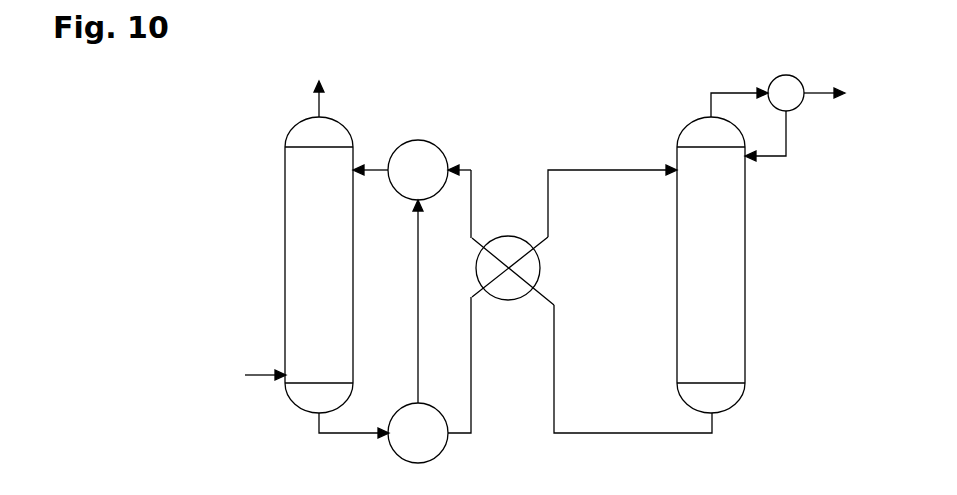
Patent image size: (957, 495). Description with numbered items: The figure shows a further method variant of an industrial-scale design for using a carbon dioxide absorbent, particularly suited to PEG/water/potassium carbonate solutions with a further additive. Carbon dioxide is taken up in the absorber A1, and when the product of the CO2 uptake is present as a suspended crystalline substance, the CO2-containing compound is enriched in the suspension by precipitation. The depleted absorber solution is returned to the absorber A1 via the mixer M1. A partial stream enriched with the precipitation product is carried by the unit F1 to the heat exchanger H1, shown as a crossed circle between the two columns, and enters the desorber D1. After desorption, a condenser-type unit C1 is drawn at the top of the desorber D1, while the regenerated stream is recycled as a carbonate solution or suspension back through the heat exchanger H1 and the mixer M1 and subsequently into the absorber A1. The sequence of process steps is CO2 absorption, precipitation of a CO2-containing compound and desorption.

The absorber A1 is at (319, 265).
The mixer M1 is at (418, 170).
The pump / feed unit F1 is at (418, 433).
The heat exchanger H1 is at (513, 270).
The desorption column D1 is at (711, 265).
The condenser C1 is at (786, 93).